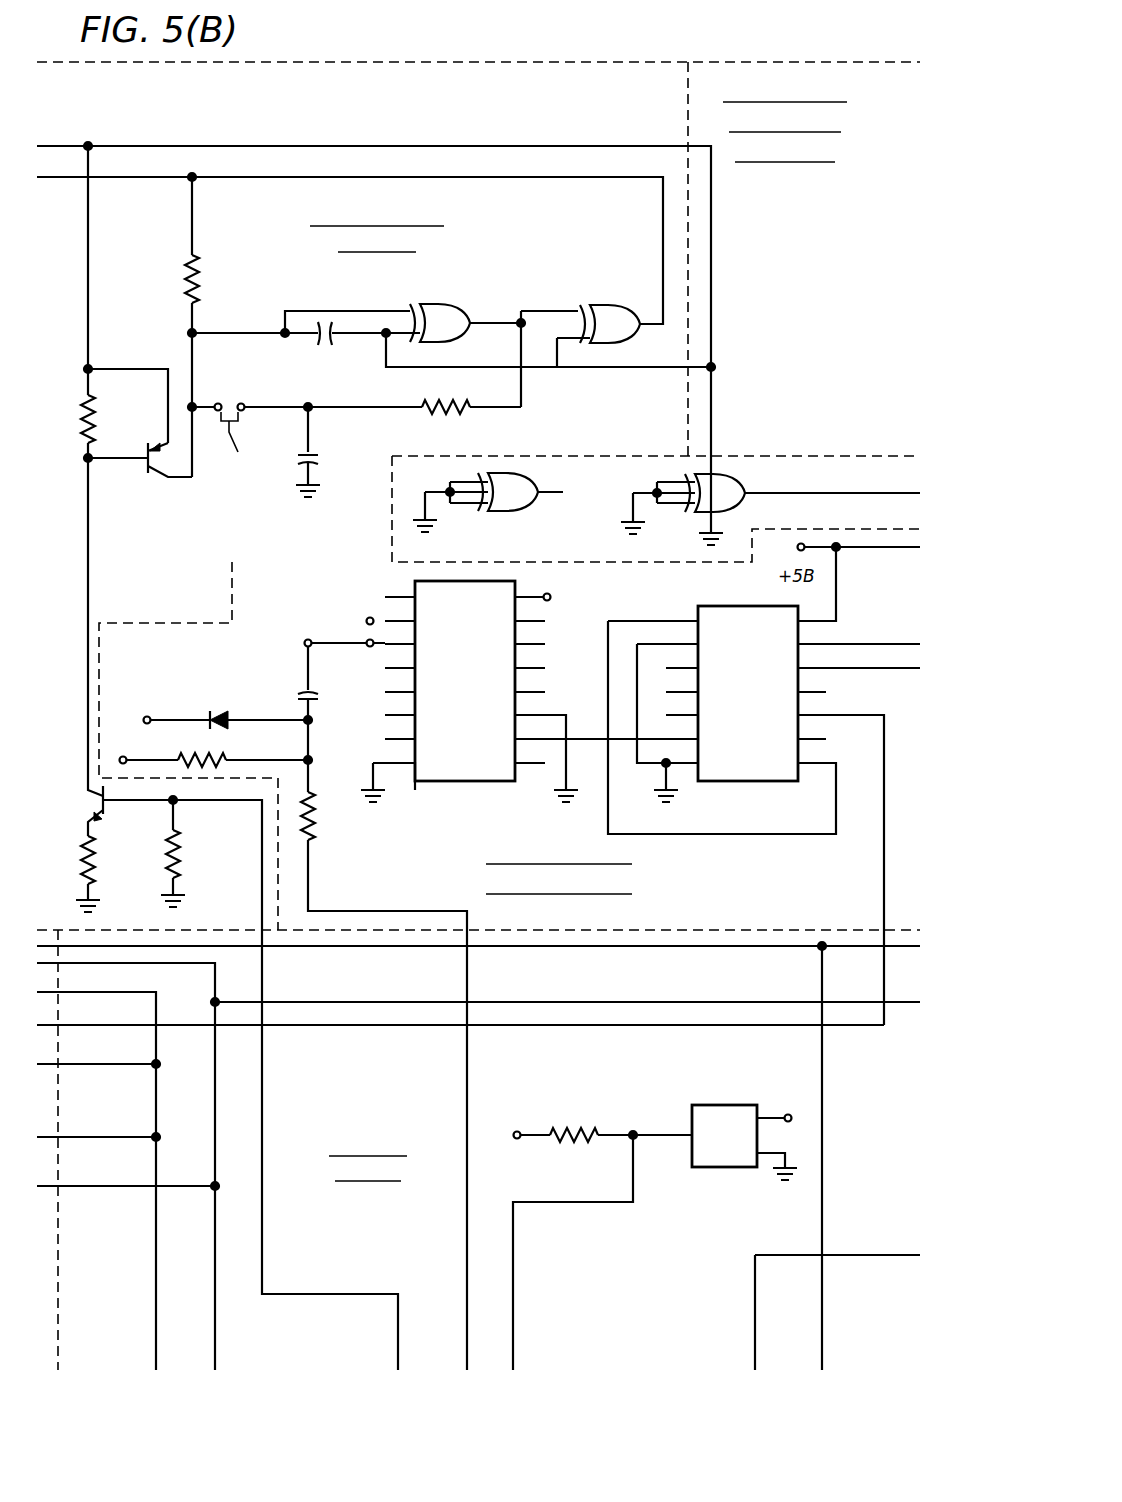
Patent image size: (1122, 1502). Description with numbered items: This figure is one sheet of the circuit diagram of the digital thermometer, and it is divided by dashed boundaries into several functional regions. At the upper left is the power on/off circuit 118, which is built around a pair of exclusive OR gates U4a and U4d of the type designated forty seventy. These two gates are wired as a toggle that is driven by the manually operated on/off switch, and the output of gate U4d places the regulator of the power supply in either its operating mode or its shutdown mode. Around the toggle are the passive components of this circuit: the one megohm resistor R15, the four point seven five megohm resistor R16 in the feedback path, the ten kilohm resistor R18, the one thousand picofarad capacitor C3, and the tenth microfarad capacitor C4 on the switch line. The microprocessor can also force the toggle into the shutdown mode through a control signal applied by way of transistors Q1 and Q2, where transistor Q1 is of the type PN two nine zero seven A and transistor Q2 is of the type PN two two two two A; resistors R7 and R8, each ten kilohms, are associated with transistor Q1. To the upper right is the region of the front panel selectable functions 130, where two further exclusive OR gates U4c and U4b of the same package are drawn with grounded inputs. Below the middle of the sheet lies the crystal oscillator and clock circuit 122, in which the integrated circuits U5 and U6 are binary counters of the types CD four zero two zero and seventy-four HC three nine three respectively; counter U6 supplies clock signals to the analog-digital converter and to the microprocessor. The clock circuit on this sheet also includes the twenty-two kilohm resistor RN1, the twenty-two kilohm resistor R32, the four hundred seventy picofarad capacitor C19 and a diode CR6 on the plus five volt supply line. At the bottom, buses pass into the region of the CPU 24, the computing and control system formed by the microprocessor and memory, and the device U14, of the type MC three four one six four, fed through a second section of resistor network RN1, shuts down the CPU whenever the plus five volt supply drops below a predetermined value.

The resistor R15 is at (196, 278).
The capacitor C3 is at (318, 350).
The exclusive OR gate U4a is at (440, 306).
The exclusive OR gate U4d is at (612, 306).
The resistor R16 is at (447, 403).
The resistor R18 is at (98, 428).
The transistor Q2 is at (145, 468).
The capacitor C4 is at (318, 456).
The exclusive OR gate U4c is at (522, 510).
The exclusive OR gate U4b is at (722, 476).
The binary counter U5 is at (465, 781).
The binary counter U6 is at (730, 781).
The capacitor C19 is at (300, 690).
The diode CR6 is at (218, 710).
The resistor network RN1 is at (208, 765).
The resistor R32 is at (316, 830).
The transistor Q1 is at (88, 790).
The resistor R7 is at (96, 845).
The resistor R8 is at (180, 860).
The voltage monitor integrated circuit U14 is at (735, 1105).
The power ON/OFF circuit 118 is at (451, 342).
The front panel selectable functions 130 is at (785, 136).
The crystal oscillator and clock circuit 122 is at (559, 883).
The CPU 24 is at (478, 1156).